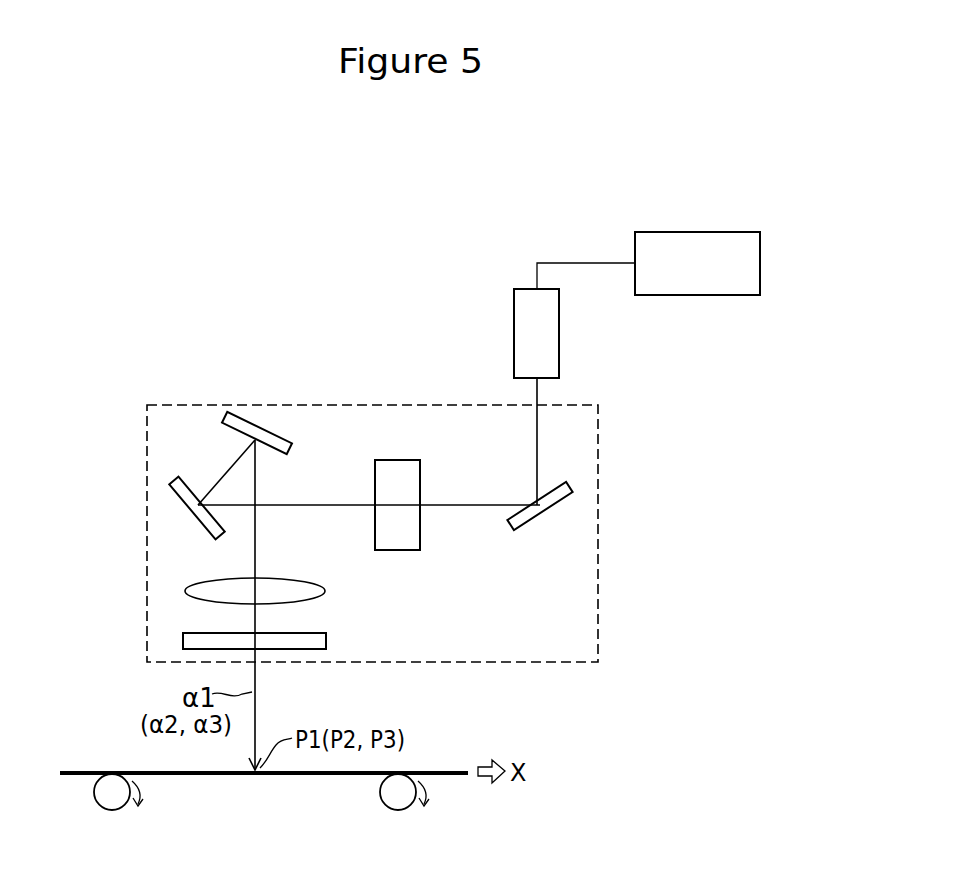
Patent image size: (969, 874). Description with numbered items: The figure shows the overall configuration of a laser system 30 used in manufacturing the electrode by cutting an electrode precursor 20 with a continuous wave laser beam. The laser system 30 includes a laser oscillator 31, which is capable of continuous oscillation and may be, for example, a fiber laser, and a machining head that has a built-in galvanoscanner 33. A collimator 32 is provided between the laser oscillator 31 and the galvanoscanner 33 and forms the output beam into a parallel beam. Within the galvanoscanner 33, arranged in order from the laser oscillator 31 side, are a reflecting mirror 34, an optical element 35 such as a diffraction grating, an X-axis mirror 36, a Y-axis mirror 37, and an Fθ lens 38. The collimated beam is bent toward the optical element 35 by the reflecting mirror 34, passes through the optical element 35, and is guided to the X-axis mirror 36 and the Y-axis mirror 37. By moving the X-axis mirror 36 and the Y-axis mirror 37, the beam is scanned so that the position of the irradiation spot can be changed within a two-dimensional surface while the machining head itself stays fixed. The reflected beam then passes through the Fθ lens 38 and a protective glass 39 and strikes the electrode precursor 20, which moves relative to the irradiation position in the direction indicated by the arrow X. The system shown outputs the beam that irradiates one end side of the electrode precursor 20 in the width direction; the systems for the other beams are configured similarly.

The laser system 30 is at (693, 139).
The laser oscillator 31 is at (702, 240).
The collimator 32 is at (546, 328).
The galvanoscanner 33 is at (176, 405).
The reflecting mirror 34 is at (552, 508).
The optical element 35 is at (398, 466).
The X-axis mirror 36 is at (188, 504).
The Y-axis mirror 37 is at (282, 438).
The Fθ lens 38 is at (328, 588).
The protective glass 39 is at (328, 638).
The electrode precursor 20 is at (322, 776).